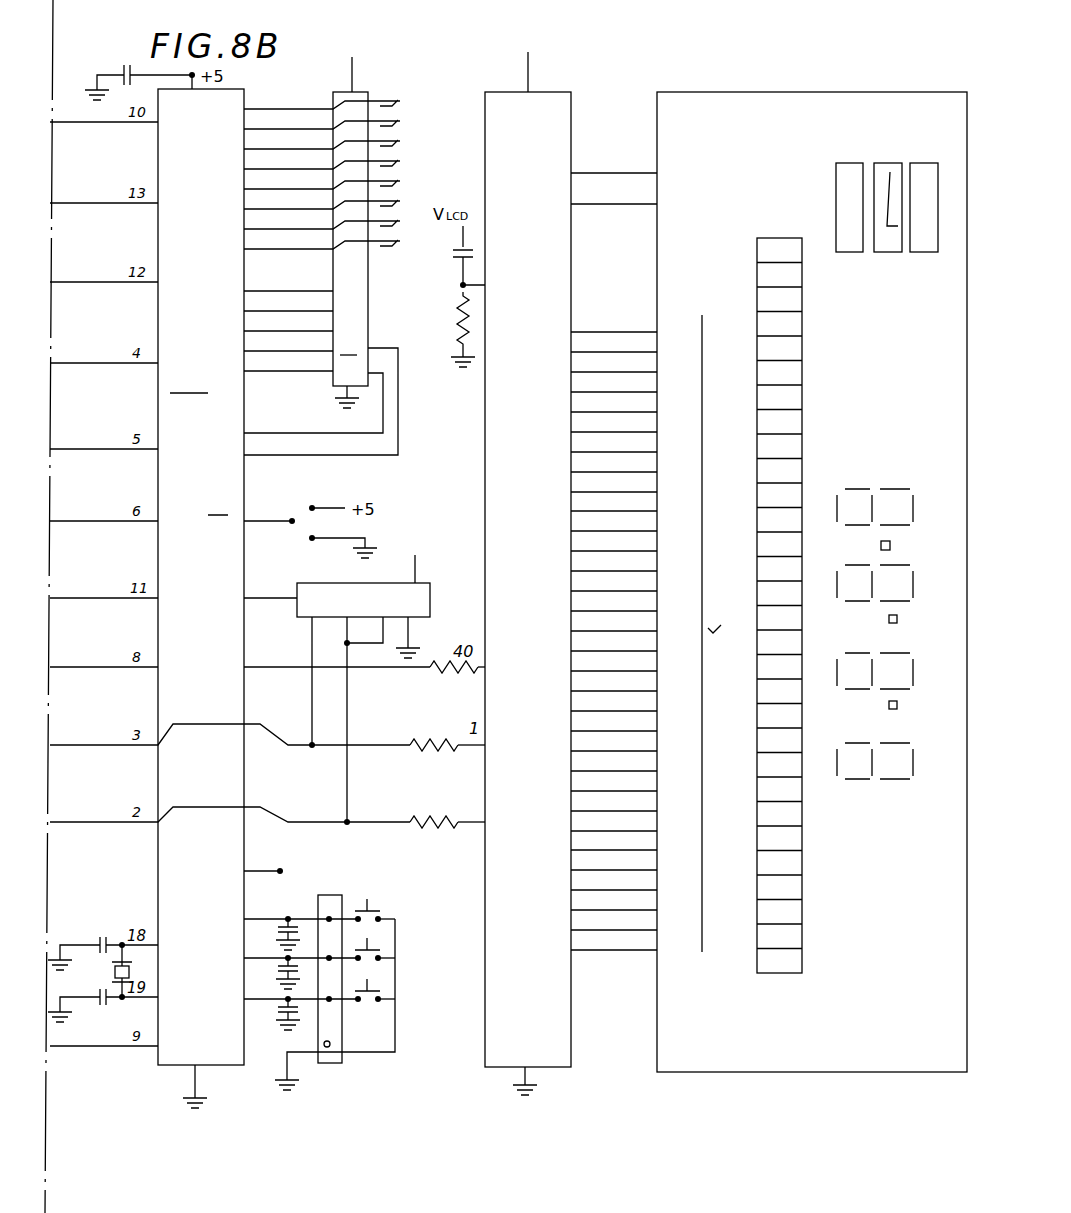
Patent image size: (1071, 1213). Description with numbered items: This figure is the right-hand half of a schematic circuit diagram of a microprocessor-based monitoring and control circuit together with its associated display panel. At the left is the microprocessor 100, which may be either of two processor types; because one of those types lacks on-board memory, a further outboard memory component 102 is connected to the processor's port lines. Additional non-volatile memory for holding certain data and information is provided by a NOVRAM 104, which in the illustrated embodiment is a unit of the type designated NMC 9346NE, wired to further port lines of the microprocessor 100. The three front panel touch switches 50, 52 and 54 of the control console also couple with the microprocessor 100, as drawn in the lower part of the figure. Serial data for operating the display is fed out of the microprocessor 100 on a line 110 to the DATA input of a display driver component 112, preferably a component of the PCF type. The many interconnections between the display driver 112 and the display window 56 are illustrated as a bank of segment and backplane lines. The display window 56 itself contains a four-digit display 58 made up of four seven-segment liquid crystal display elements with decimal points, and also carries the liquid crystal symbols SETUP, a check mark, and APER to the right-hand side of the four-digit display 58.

The touch switch 50 is at (355, 972).
The touch switch 52 is at (395, 944).
The touch switch 54 is at (395, 984).
The display window 56 is at (812, 549).
The four-digit display 58 is at (893, 788).
The microprocessor 100 is at (245, 1068).
The outboard memory component 102 is at (368, 281).
The NOVRAM 104 is at (432, 583).
The line 110 is at (278, 812).
The display driver component 112 is at (485, 1068).